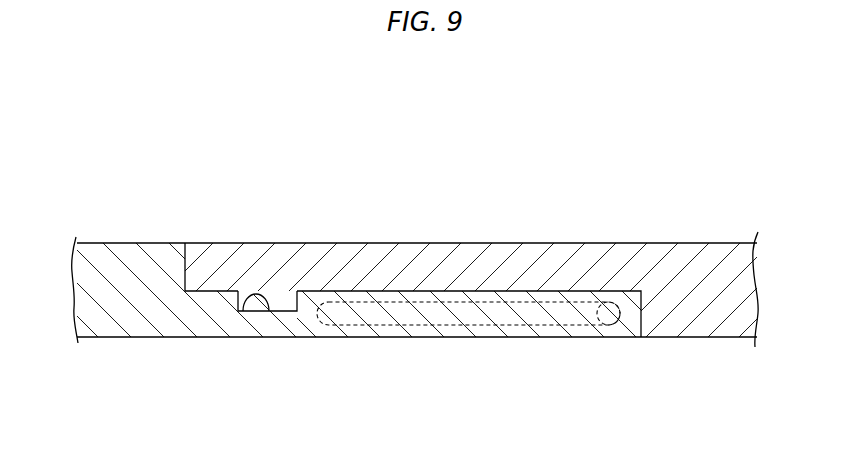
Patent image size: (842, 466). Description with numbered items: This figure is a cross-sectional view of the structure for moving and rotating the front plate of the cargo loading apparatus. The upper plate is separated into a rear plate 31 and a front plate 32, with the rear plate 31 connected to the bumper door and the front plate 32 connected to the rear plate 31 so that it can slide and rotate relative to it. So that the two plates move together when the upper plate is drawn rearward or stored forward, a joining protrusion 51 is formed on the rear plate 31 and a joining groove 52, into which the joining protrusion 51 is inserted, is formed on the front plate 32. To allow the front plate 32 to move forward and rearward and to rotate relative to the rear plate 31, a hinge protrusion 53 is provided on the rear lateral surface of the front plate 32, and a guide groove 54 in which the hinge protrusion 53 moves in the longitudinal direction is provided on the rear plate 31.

The rear plate 31 is at (499, 256).
The front plate 32 is at (140, 262).
The joining protrusion 51 is at (277, 300).
The joining groove 52 is at (243, 312).
The hinge protrusion 53 is at (608, 326).
The guide groove 54 is at (473, 327).